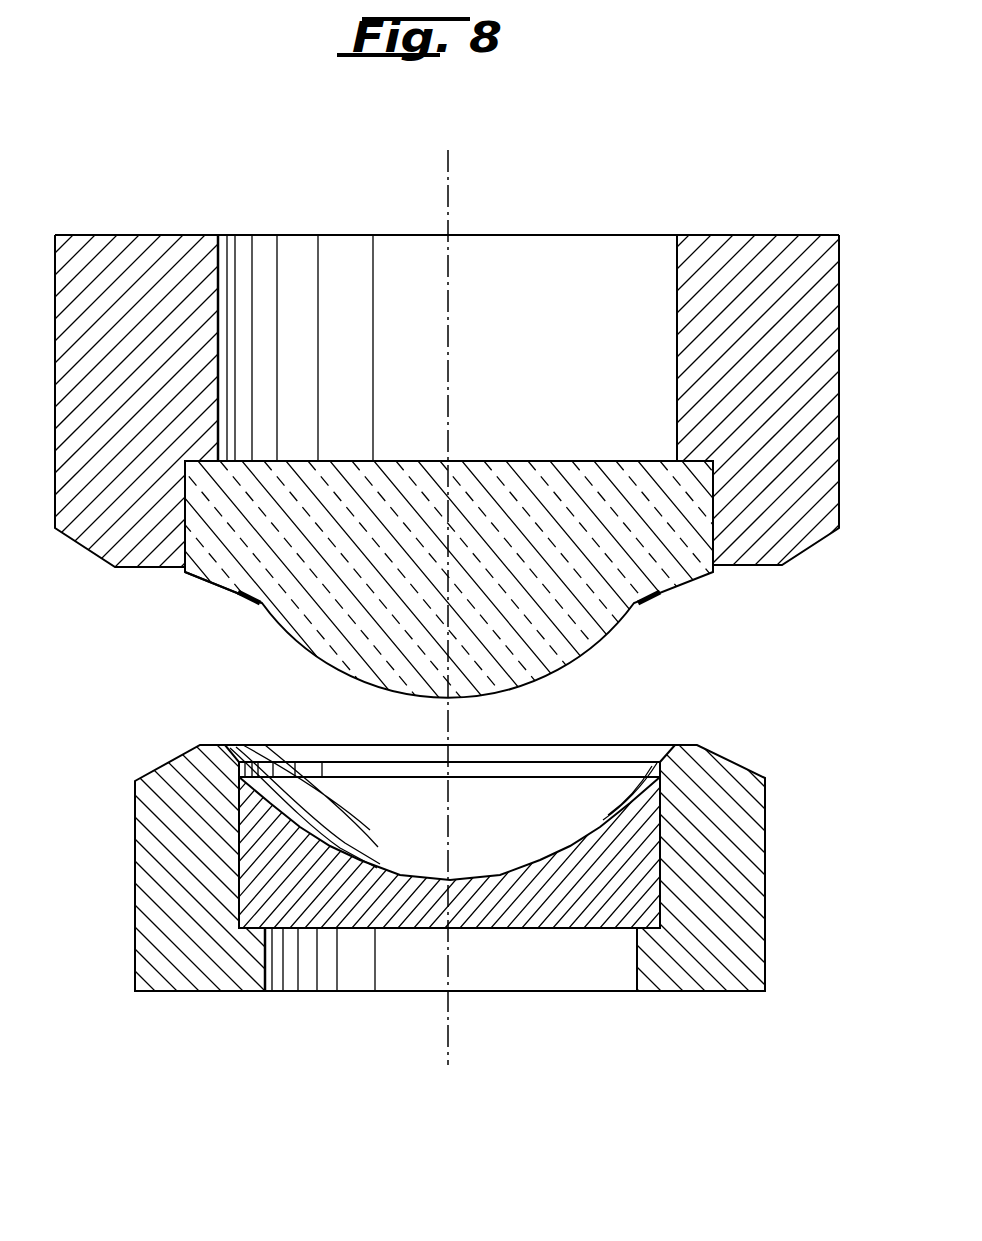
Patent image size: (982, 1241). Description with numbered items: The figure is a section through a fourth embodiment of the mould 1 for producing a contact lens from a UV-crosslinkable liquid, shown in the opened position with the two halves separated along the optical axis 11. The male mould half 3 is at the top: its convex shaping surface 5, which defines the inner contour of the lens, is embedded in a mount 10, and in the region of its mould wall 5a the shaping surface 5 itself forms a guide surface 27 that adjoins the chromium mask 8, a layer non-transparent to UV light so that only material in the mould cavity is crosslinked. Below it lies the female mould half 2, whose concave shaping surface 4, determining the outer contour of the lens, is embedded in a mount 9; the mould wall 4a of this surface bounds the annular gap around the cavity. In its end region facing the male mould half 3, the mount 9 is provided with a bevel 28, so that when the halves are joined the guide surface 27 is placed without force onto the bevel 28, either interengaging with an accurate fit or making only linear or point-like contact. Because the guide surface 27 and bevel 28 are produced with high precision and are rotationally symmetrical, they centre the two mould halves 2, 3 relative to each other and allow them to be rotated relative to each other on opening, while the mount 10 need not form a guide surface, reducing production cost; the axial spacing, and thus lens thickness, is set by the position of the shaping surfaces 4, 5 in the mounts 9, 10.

The mould 1 is at (160, 197).
The female mould half 2 is at (133, 948).
The male mould half 3 is at (95, 235).
The shaping surface 4 is at (545, 857).
The mould wall 4a is at (650, 775).
The shaping surface 5 is at (512, 690).
The mould wall 5a is at (651, 600).
The chromium mask 8 is at (243, 597).
The mount 9 is at (745, 872).
The mount 10 is at (818, 385).
The optical axis 11 is at (448, 188).
The guide surface 27 is at (225, 585).
The bevel 28 is at (223, 745).